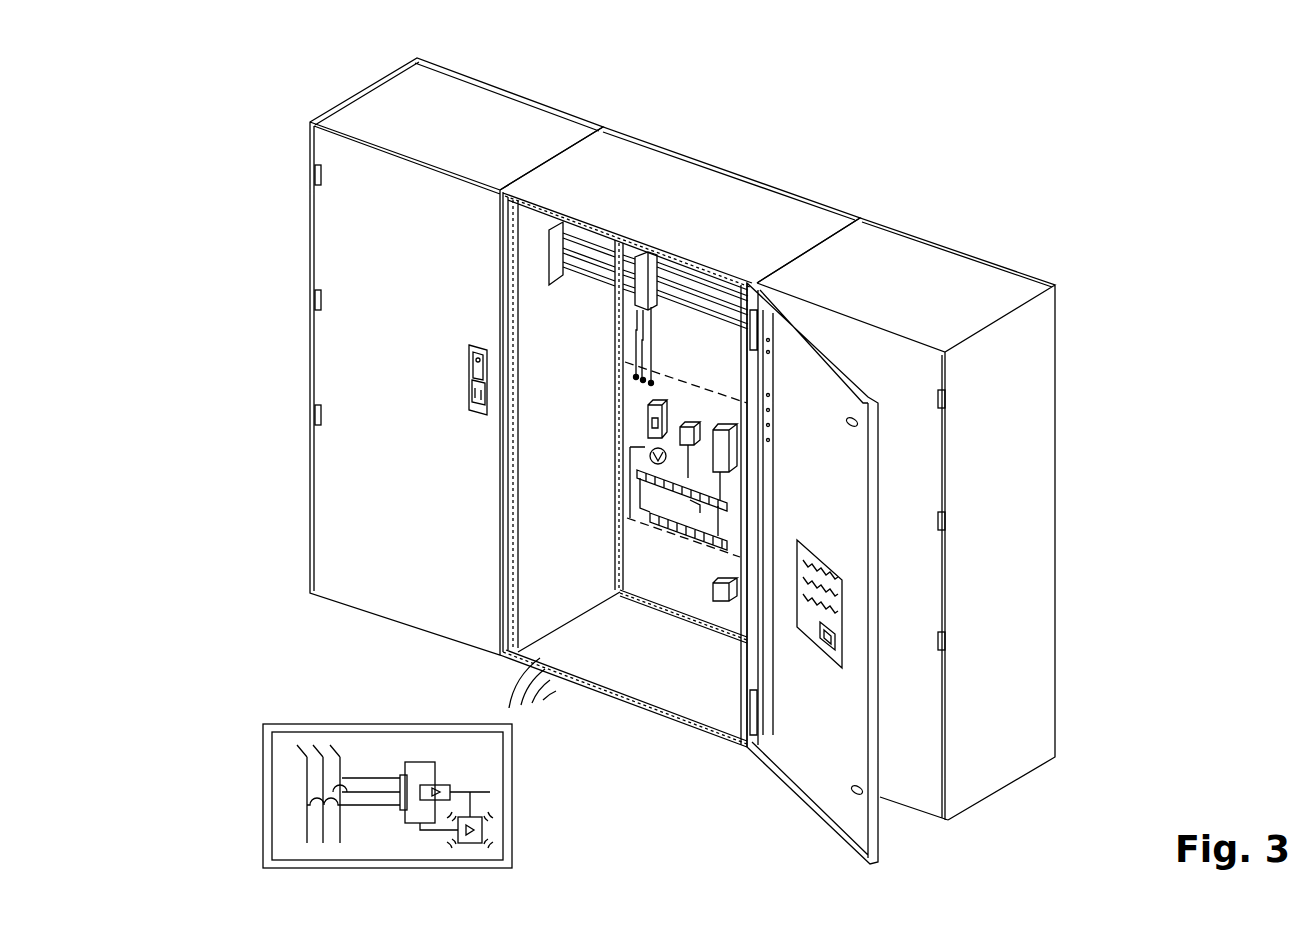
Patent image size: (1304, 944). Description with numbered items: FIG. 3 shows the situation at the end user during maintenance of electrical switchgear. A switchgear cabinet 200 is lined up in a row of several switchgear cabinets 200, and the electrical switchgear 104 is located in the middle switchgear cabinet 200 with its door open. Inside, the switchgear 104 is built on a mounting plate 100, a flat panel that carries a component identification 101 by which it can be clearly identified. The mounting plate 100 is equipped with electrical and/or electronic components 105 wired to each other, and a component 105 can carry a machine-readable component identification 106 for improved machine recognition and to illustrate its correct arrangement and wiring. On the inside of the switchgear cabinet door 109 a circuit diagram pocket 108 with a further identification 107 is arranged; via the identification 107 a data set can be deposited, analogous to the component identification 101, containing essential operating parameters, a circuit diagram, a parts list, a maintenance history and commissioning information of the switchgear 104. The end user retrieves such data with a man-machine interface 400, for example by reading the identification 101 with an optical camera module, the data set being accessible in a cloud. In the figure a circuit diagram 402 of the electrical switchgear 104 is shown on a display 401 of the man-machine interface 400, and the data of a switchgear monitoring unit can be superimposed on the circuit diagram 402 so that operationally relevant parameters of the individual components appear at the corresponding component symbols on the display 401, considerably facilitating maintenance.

The switchgear cabinet 200 is at (498, 112).
The mounting plate 100 is at (662, 572).
The component identification 101 is at (715, 590).
The electrical switchgear 104 is at (690, 387).
The electrical and/or electronic components 105 is at (685, 413).
The machine-readable component identification 106 is at (653, 428).
The further identification 107 is at (832, 655).
The circuit diagram pocket 108 is at (820, 572).
The switchgear cabinet door 109 is at (800, 788).
The man-machine interface 400 is at (337, 768).
The display 401 is at (287, 758).
The circuit diagram 402 is at (373, 770).